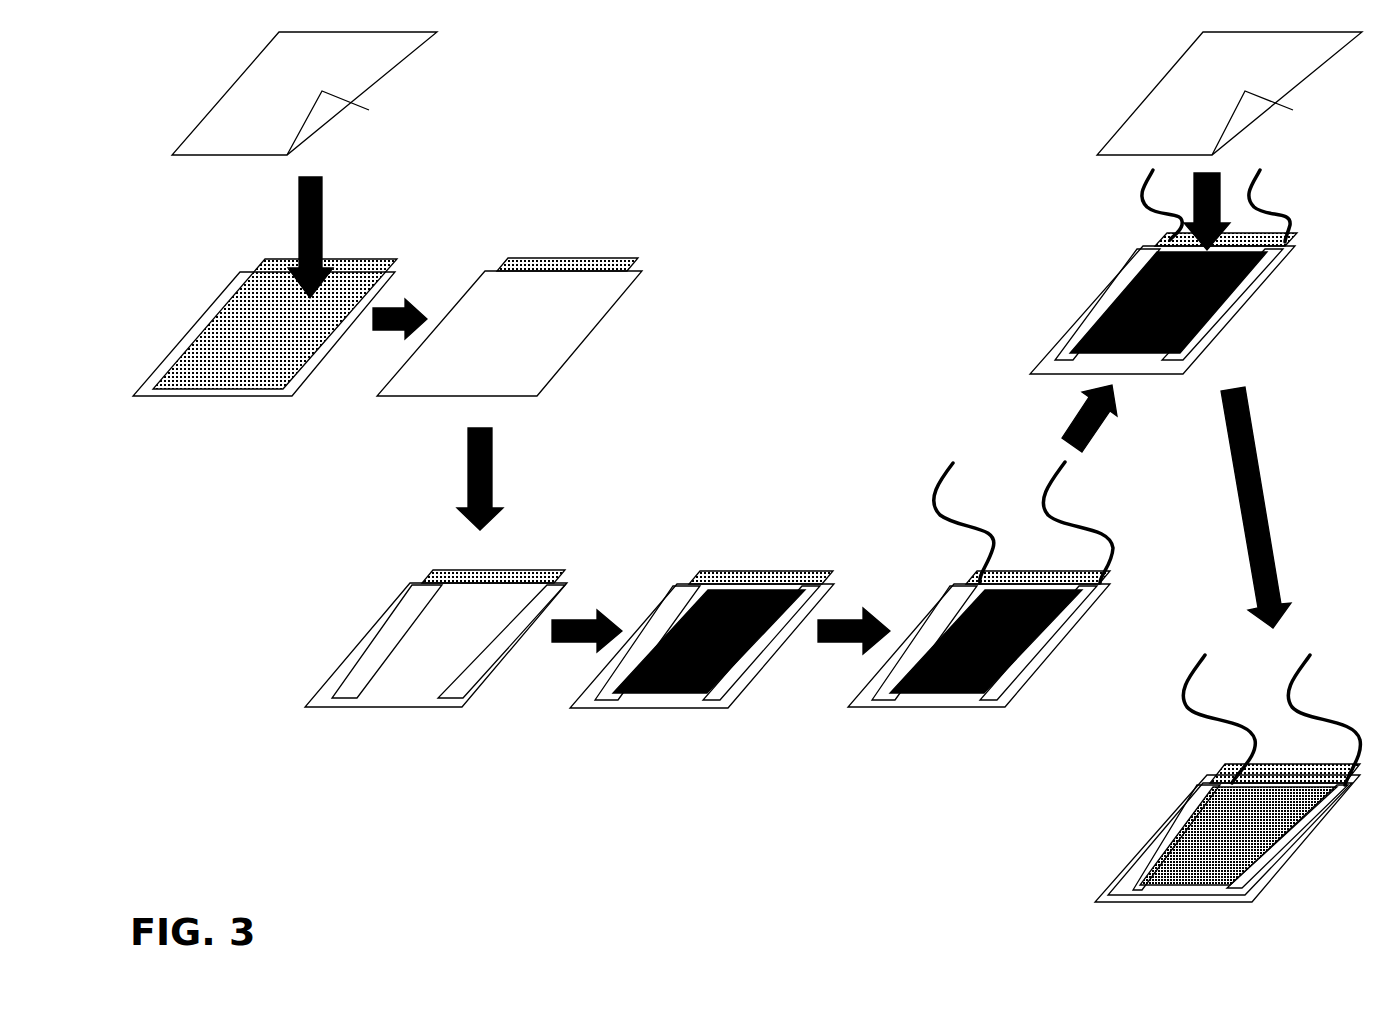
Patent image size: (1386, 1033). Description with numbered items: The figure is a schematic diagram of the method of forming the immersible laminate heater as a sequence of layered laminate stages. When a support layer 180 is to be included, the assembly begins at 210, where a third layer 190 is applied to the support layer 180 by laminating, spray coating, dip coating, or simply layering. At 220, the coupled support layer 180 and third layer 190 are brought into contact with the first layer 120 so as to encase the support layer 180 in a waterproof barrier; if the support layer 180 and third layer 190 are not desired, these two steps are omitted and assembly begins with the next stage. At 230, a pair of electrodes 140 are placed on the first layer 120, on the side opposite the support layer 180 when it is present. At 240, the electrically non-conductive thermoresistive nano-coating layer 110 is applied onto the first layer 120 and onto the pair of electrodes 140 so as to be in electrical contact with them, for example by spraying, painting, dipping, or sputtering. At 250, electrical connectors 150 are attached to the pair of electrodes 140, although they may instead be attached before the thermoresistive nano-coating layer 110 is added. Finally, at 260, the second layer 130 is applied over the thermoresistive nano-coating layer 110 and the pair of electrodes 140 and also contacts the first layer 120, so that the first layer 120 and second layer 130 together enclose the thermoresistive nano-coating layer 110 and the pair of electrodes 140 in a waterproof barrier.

The thermoresistive nano-coating layer 110 is at (763, 590).
The first layer 120 is at (402, 75).
The second layer 130 is at (1157, 80).
The pair of electrodes 140 is at (553, 597).
The electrical connectors 150 is at (935, 478).
The support layer 180 is at (257, 257).
The third layer 190 is at (265, 400).
The step of applying third layer to support layer 210 is at (334, 237).
The step of contacting first layer 220 is at (391, 330).
The step of placing electrodes 230 is at (460, 479).
The step of applying thermoresistive nano-coating layer 240 is at (579, 643).
The step of attaching electrical connectors 250 is at (852, 637).
The step of applying second layer 260 is at (1272, 507).